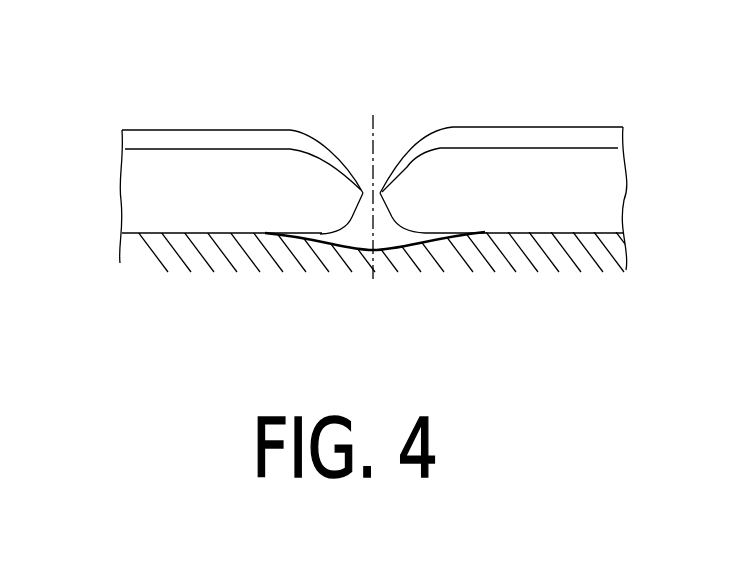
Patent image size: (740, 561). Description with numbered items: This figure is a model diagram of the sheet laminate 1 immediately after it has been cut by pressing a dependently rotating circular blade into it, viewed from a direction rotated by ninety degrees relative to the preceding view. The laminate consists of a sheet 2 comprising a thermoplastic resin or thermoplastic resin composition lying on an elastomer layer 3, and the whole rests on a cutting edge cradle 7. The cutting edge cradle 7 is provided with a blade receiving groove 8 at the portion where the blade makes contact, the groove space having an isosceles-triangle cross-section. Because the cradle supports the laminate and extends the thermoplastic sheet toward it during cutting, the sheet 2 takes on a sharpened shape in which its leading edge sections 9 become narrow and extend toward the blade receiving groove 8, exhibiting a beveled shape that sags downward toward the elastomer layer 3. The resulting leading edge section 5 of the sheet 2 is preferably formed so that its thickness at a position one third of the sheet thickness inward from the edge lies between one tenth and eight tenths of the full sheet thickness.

The sheet laminate 1 is at (120, 155).
The sheet 2 is at (225, 137).
The elastomer layer 3 is at (143, 193).
The leading edge section 5 is at (315, 218).
The cutting edge cradle 7 is at (456, 243).
The blade receiving groove 8 is at (385, 250).
The leading edge sections 9 is at (348, 161).